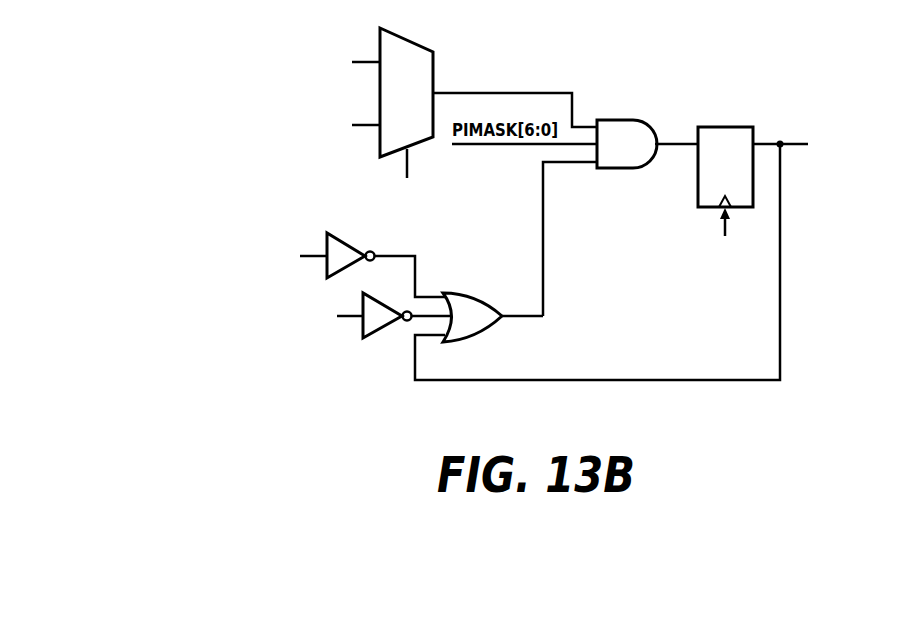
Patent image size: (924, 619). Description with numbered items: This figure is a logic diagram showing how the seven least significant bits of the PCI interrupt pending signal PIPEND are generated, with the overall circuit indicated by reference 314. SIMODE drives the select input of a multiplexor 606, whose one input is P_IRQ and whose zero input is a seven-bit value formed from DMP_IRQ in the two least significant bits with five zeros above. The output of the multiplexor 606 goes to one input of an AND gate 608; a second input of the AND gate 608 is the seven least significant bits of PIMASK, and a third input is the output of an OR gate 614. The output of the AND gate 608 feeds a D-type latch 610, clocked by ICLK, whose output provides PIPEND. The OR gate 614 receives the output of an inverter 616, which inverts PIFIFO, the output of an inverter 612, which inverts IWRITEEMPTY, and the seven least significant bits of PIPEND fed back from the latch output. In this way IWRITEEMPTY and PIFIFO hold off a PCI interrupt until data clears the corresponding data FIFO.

The multiplexor 606 is at (408, 35).
The AND gate 608 is at (628, 121).
The D-type latch 610 is at (728, 127).
The inverter 612 is at (372, 339).
The OR gate 614 is at (466, 343).
The inverter 616 is at (335, 239).
The interrupt pending circuit 314 is at (770, 412).